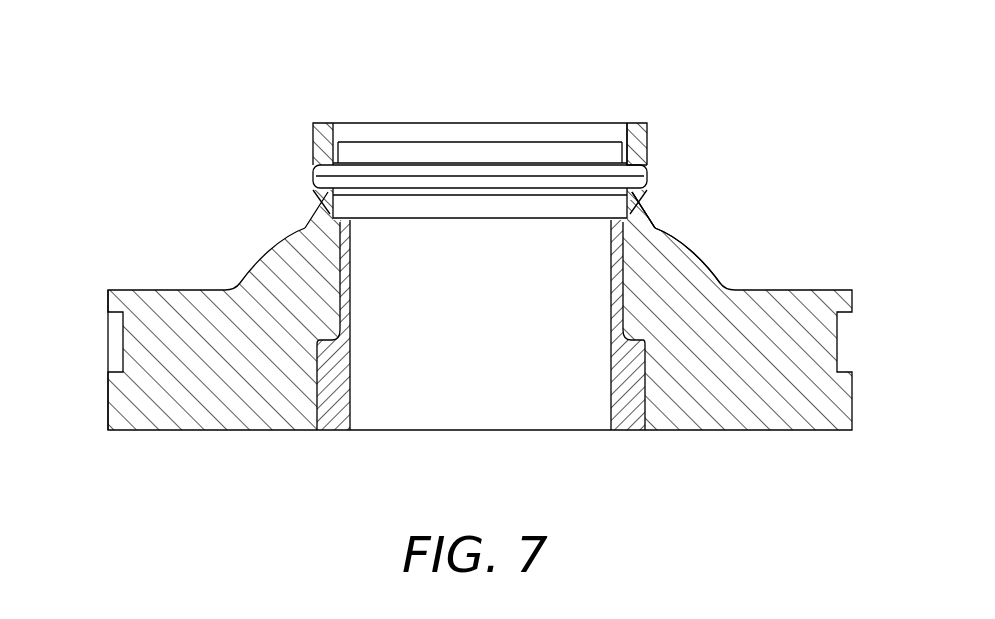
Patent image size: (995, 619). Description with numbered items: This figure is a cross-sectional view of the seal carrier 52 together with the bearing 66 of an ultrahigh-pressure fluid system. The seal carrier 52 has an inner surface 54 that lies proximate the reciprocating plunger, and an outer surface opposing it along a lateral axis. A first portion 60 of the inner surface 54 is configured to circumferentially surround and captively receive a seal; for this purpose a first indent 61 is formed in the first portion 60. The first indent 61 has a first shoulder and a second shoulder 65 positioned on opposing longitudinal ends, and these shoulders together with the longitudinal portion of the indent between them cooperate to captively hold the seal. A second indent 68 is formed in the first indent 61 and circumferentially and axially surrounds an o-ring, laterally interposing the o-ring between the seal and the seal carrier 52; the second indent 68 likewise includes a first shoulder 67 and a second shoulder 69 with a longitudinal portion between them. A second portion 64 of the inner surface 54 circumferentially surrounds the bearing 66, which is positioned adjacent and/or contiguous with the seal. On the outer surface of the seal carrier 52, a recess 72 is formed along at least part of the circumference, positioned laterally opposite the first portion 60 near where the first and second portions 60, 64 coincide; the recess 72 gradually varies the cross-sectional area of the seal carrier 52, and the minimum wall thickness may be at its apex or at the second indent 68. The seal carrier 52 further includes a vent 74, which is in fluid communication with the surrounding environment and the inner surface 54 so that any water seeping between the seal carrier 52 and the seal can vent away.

The seal carrier 52 is at (793, 288).
The inner surface 54 is at (330, 124).
The first portion 60 is at (470, 169).
The first indent 61 is at (340, 205).
The second portion 64 is at (78, 232).
The second shoulder 65 is at (670, 207).
The bearing 66 is at (624, 415).
The first shoulder 67 is at (642, 144).
The second indent 68 is at (321, 173).
The second shoulder 69 is at (651, 193).
The recess 72 is at (684, 197).
The vent 74 is at (624, 126).